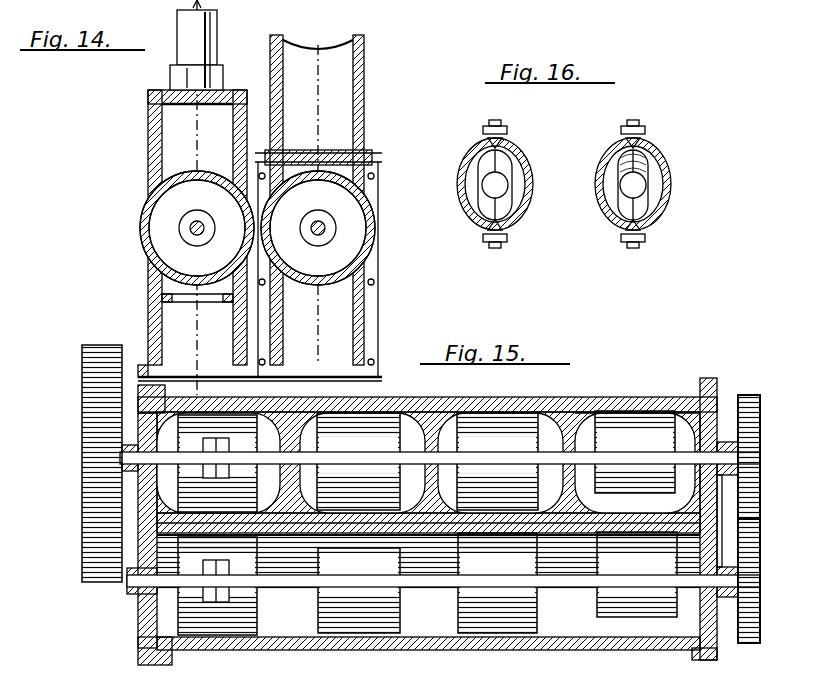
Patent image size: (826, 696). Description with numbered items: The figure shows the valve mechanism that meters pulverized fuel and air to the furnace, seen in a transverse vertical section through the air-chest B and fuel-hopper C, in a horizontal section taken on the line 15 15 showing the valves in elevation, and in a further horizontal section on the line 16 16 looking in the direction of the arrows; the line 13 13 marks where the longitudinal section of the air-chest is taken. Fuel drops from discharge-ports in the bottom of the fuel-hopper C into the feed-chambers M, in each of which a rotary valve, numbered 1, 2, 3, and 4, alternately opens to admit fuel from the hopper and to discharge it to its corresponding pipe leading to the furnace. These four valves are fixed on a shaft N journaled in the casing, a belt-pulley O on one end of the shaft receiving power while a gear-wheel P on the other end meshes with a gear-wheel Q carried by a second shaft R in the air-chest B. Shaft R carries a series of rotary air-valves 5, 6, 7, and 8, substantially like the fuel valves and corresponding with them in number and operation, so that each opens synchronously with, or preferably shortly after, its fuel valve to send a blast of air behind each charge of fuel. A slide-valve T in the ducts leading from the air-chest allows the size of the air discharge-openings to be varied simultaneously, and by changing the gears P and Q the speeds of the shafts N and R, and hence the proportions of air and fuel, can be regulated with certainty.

In FIG. 15, the rotary fuel valve 1 is at (217, 463).
In FIG. 15, the rotary fuel valve 2 is at (358, 461).
In FIG. 15, the rotary fuel valve 3 is at (497, 461).
In FIG. 15, the rotary fuel valve 4 is at (635, 452).
In FIG. 15, the rotary air valve 5 is at (217, 586).
In FIG. 15, the rotary air valve 6 is at (359, 590).
In FIG. 15, the rotary air valve 7 is at (497, 583).
In FIG. 15, the rotary air valve 8 is at (637, 574).
In FIG. 15, the section line 13 13 is at (193, 384).
In FIG. 14, the section line 15 15 is at (445, 228).
In FIG. 14, the section line 16 16 is at (400, 323).
In FIG. 14, the air-chest B is at (246, 195).
In FIG. 15, the air-chest B is at (428, 659).
In FIG. 14, the fuel-hopper C is at (326, 206).
In FIG. 15, the fuel-hopper C is at (427, 392).
In FIG. 14, the slide-valve T is at (160, 296).
In FIG. 15, the shaft N is at (550, 420).
In FIG. 15, the feed-chamber M is at (592, 412).
In FIG. 15, the belt-pulley O is at (84, 432).
In FIG. 15, the gear-wheel P is at (762, 440).
In FIG. 15, the gear-wheel Q is at (762, 556).
In FIG. 15, the second shaft R is at (578, 588).